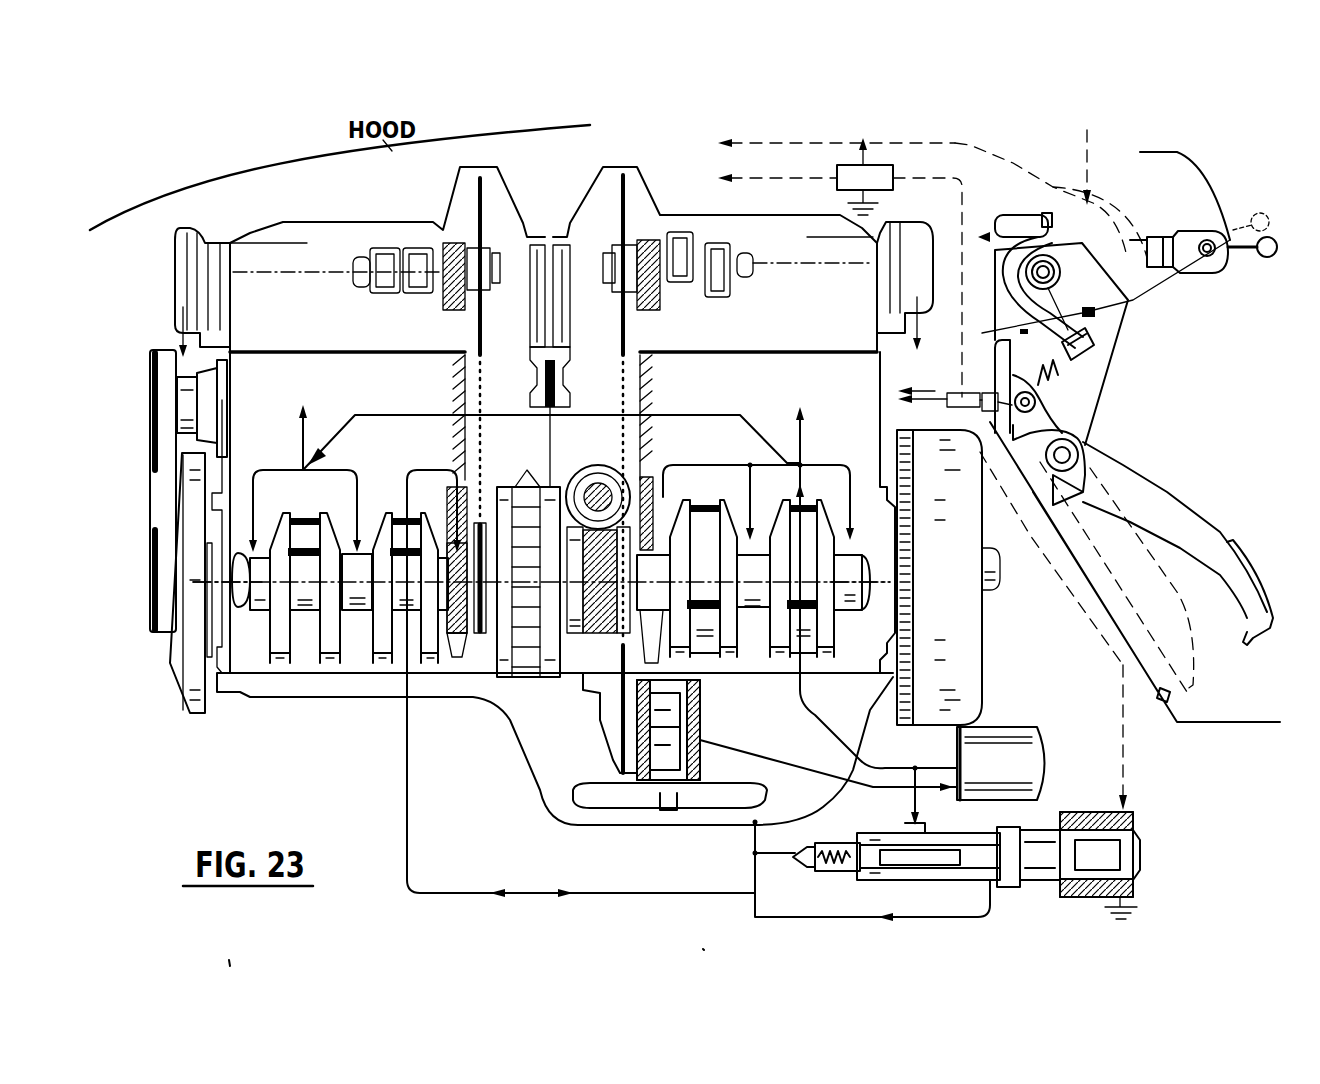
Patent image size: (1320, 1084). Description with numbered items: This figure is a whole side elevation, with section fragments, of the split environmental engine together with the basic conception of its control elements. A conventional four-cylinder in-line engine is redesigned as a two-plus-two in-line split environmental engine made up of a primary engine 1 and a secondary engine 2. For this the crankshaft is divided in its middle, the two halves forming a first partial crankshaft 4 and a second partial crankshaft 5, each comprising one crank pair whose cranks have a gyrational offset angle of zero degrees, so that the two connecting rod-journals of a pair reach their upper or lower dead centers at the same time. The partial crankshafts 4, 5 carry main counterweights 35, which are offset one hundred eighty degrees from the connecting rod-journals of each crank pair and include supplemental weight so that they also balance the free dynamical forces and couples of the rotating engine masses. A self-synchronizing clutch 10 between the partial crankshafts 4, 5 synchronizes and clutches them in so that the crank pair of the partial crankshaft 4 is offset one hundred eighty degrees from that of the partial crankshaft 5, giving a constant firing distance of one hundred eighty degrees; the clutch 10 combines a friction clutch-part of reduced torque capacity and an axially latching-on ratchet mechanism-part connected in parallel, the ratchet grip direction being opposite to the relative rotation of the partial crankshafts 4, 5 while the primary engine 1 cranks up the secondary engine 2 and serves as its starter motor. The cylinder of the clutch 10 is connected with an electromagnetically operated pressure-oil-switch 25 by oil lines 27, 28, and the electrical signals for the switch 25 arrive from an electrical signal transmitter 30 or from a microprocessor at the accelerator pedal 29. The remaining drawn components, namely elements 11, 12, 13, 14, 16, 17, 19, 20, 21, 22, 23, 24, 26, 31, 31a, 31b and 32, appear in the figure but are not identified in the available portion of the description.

The primary engine 1 is at (724, 212).
The secondary engine 2 is at (332, 212).
The first partial crankshaft 4 is at (852, 600).
The second partial crankshaft 5 is at (256, 597).
The self-synchronizing clutch 10 is at (528, 559).
The camshaft 11 is at (741, 270).
The camshaft 12 is at (361, 278).
The timing chain 13 is at (621, 388).
The timing chain 14 is at (492, 386).
The flywheel 16 is at (945, 625).
The crankshaft pulley 17 is at (180, 655).
The balance shaft 19 is at (592, 470).
The oil pump 20 is at (700, 715).
The accumulator 21 is at (1025, 757).
The oil passage 22 is at (705, 465).
The oil passage 23 is at (278, 470).
The oil passage 24 is at (680, 415).
The electromagnetically operated pressure-oil-switch 25 is at (963, 879).
The solenoid 26 is at (1050, 879).
The oil line 27 is at (407, 800).
The oil line 28 is at (461, 630).
The accelerator pedal 29 is at (1143, 498).
The electrical signal transmitter 30 is at (1102, 360).
The lever 31 is at (1191, 236).
The lever position 31a is at (1263, 213).
The lever knob 31b is at (1267, 257).
The sensor 32 is at (992, 566).
The main counterweights 35 is at (327, 620).